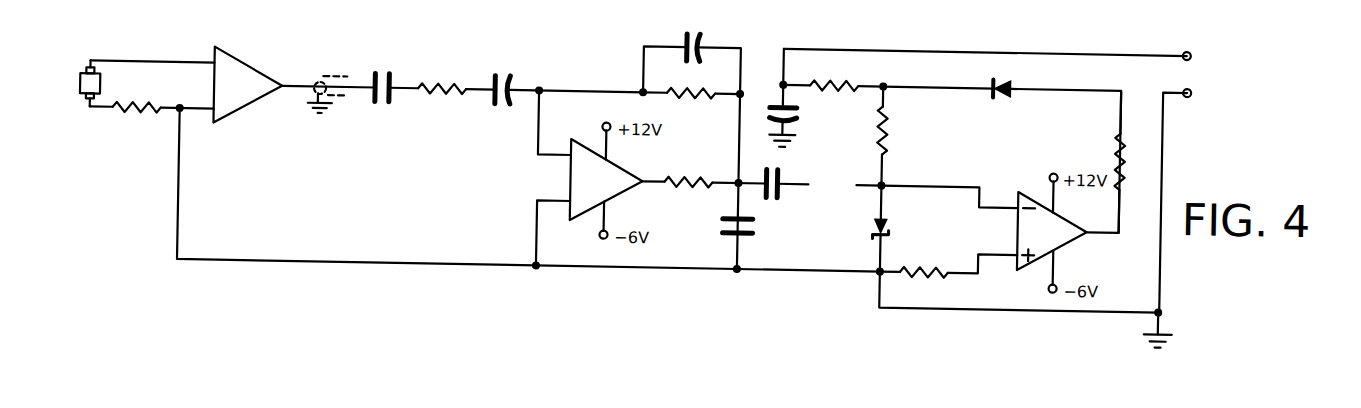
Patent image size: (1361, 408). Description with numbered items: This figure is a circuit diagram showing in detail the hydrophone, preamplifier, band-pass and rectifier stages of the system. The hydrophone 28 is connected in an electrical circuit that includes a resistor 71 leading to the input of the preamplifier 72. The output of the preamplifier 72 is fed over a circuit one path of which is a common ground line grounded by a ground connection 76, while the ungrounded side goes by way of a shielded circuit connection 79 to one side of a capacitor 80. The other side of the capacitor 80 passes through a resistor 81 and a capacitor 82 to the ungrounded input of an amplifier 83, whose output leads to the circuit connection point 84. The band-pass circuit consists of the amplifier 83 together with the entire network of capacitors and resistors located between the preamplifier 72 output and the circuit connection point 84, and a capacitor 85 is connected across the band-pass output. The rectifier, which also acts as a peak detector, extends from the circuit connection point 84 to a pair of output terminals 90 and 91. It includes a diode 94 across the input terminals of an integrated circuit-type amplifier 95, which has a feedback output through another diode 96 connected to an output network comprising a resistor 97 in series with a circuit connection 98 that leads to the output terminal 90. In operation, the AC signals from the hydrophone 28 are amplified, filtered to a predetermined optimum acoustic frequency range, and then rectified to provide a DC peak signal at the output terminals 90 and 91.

The hydrophone 28 is at (95, 83).
The resistor 71 is at (132, 110).
The preamplifier 72 is at (211, 81).
The shielded circuit connection 79 is at (342, 95).
The capacitor 80 is at (370, 79).
The resistor 81 is at (458, 80).
The capacitor 82 is at (508, 80).
The amplifier 83 is at (569, 166).
The circuit connection point 84 is at (736, 170).
The capacitor 85 is at (752, 223).
The resistor 97 is at (855, 70).
The diode 94 is at (887, 225).
The integrated circuit-type amplifier 95 is at (1017, 210).
The diode 96 is at (987, 85).
The circuit connection 98 is at (958, 37).
The output terminal 90 is at (1188, 37).
The output terminal 91 is at (1189, 76).
The ground connection 76 is at (1170, 311).